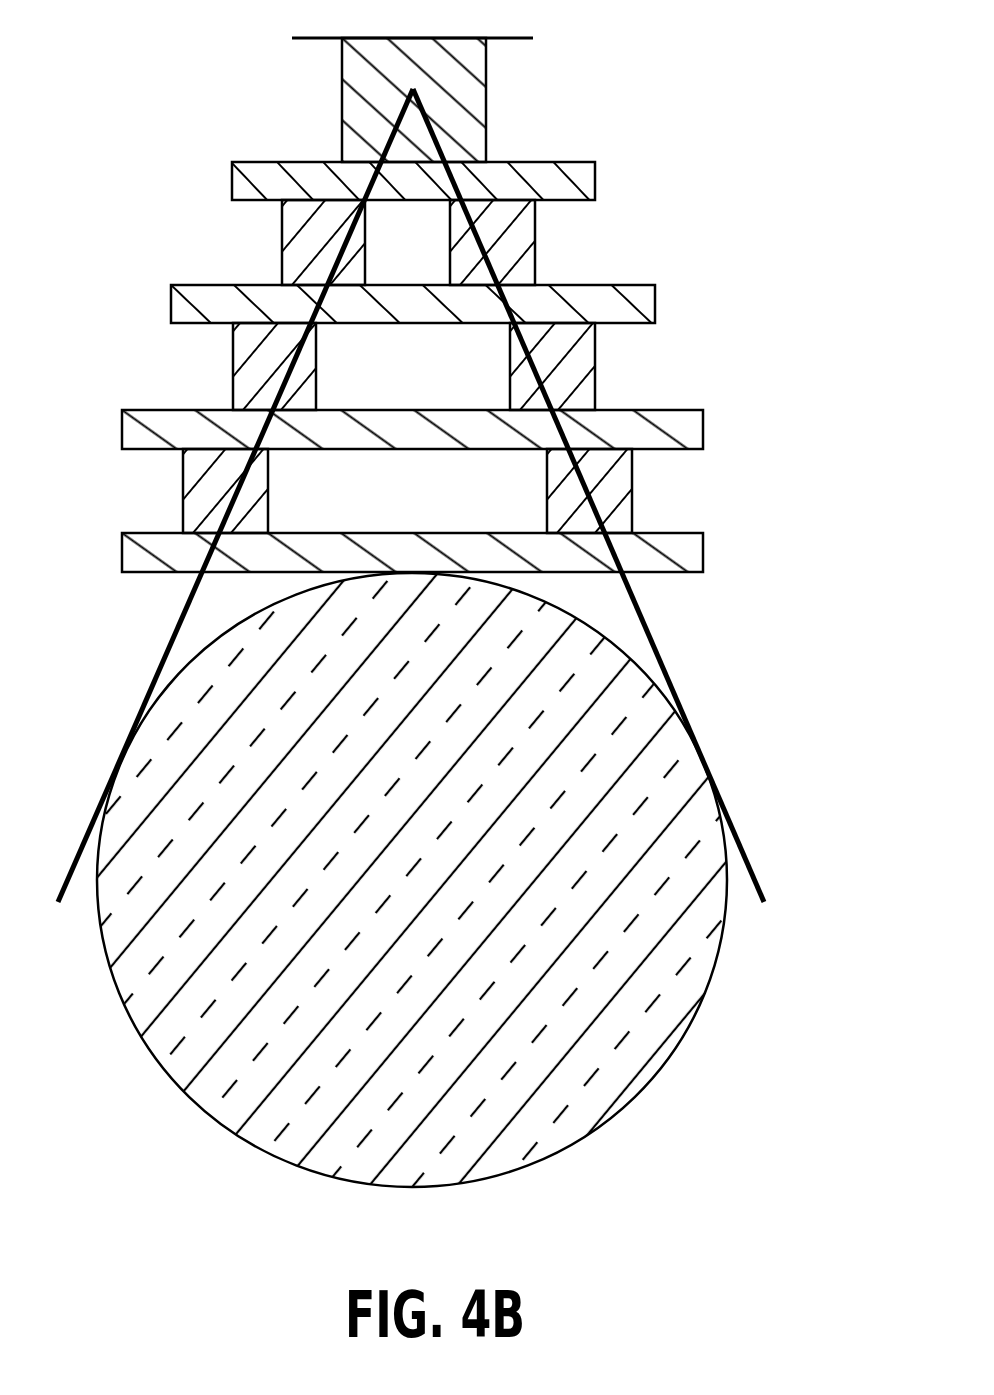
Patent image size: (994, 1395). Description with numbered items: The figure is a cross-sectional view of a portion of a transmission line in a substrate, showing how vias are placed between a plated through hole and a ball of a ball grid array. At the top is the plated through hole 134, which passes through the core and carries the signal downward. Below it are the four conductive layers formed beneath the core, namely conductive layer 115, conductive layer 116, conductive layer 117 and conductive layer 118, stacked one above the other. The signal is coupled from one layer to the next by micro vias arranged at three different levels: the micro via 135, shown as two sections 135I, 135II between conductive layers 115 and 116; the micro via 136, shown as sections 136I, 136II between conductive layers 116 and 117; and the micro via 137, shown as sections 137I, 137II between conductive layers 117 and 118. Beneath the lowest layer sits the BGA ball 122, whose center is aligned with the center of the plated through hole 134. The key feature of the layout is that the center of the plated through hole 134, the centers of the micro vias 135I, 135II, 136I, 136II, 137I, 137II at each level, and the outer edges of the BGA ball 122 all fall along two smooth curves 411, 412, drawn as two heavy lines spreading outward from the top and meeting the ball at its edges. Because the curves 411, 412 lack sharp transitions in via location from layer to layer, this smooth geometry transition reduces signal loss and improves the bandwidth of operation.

The plated through hole 134 is at (473, 67).
The conductive layer 115 is at (590, 181).
The micro via 135 is at (415, 242).
The micro via 135I is at (283, 240).
The micro via 135II is at (523, 240).
The conductive layer 116 is at (647, 305).
The micro via 136 is at (414, 366).
The micro via 136I is at (237, 371).
The micro via 136II is at (580, 365).
The conductive layer 117 is at (692, 432).
The micro via 137 is at (405, 491).
The micro via 137I is at (182, 494).
The micro via 137II is at (613, 486).
The conductive layer 118 is at (693, 555).
The BGA ball 122 is at (707, 967).
The smooth curve 411 is at (374, 119).
The smooth curve 412 is at (452, 123).